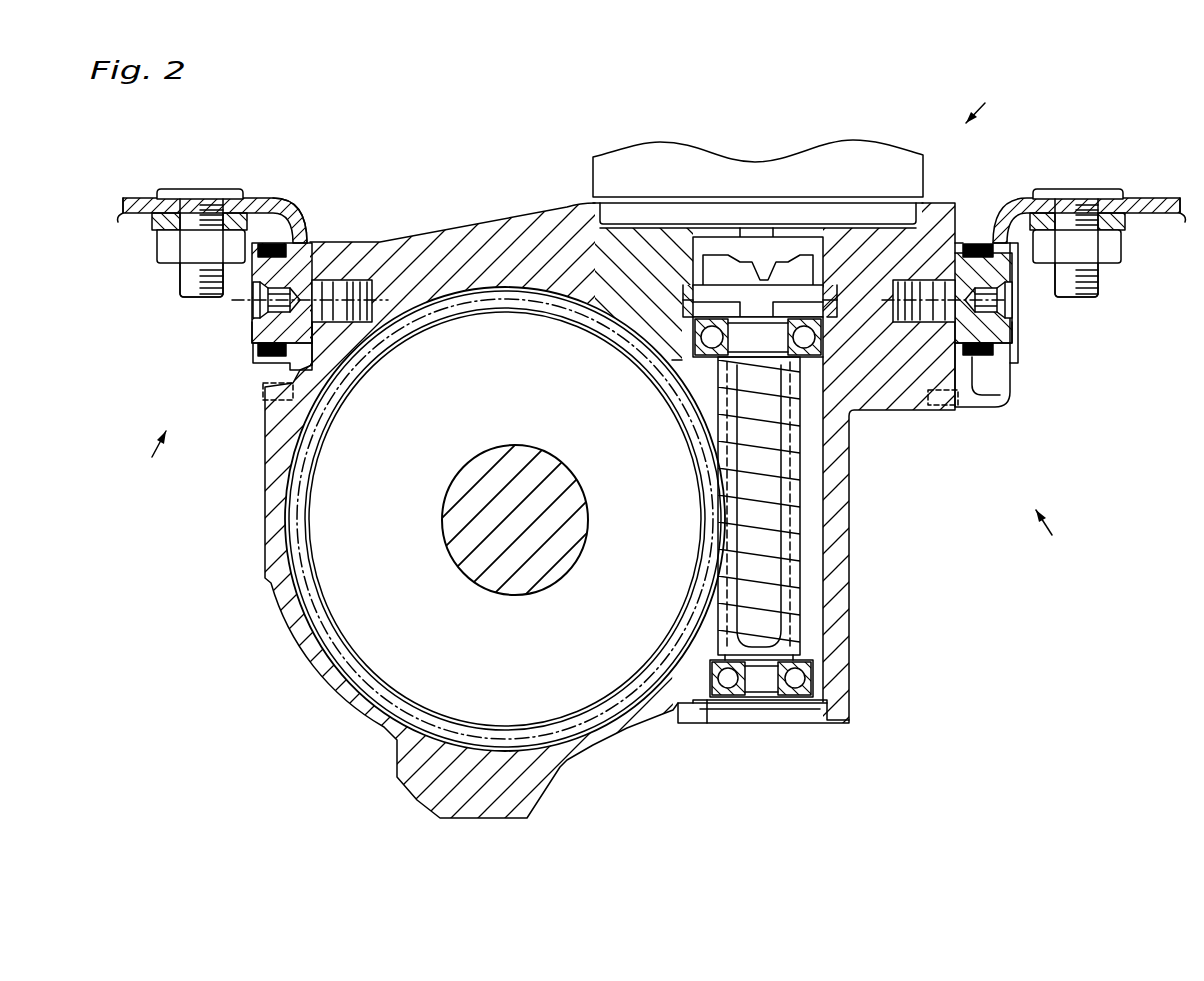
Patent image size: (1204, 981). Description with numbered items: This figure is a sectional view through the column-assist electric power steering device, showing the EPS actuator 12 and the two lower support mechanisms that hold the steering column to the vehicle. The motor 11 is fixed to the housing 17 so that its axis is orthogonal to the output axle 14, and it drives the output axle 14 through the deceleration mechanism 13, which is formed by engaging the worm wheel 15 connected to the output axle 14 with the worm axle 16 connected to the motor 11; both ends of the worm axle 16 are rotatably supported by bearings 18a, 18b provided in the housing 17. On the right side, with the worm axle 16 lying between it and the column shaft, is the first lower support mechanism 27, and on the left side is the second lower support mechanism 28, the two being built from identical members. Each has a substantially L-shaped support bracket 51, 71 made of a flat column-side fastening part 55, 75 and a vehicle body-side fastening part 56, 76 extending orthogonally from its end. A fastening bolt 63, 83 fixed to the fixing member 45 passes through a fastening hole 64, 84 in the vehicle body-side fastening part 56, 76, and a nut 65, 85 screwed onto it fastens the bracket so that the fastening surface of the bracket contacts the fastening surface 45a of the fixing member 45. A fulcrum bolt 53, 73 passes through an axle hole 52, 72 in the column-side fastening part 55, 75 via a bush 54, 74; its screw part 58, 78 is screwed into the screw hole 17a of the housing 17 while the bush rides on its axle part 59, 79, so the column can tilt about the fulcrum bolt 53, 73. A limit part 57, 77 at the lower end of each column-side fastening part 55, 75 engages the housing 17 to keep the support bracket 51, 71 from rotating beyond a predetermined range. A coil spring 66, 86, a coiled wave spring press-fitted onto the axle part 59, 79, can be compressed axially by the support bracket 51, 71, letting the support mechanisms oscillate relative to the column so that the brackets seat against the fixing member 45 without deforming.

The motor 11 is at (622, 157).
The EPS actuator 12 is at (990, 99).
The deceleration mechanism 13 is at (733, 564).
The output axle 14 is at (583, 518).
The worm wheel 15 is at (617, 680).
The worm axle 16 is at (755, 700).
The housing 17 is at (490, 228).
The screw hole 17a is at (380, 338).
The bearing 18a is at (672, 371).
The bearing 18b is at (700, 660).
The first lower support mechanism 27 is at (1058, 537).
The second lower support mechanism 28 is at (150, 459).
The fixing member 45 is at (147, 198).
The fastening surface 45a is at (123, 213).
The support bracket 51 is at (1000, 218).
The axle hole 52 is at (1017, 338).
The fulcrum bolt 53 is at (1012, 300).
The bush 54 is at (1000, 385).
The column-side fastening part 55 is at (1005, 378).
The vehicle body-side fastening part 56 is at (1130, 222).
The limit part 57 is at (930, 407).
The screw part 58 is at (918, 287).
The axle part 59 is at (975, 370).
The fastening bolt 63 is at (1080, 189).
The fastening hole 64 is at (1108, 247).
The nut 65 is at (1103, 258).
The coil spring 66 is at (975, 243).
The support bracket 71 is at (292, 230).
The axle hole 72 is at (252, 333).
The fulcrum bolt 73 is at (253, 300).
The bush 74 is at (300, 241).
The column-side fastening part 75 is at (282, 357).
The vehicle body-side fastening part 76 is at (152, 226).
The limit part 77 is at (268, 390).
The screw part 78 is at (342, 290).
The axle part 79 is at (314, 335).
The fastening bolt 83 is at (204, 190).
The fastening hole 84 is at (172, 257).
The nut 85 is at (182, 280).
The coil spring 86 is at (262, 243).